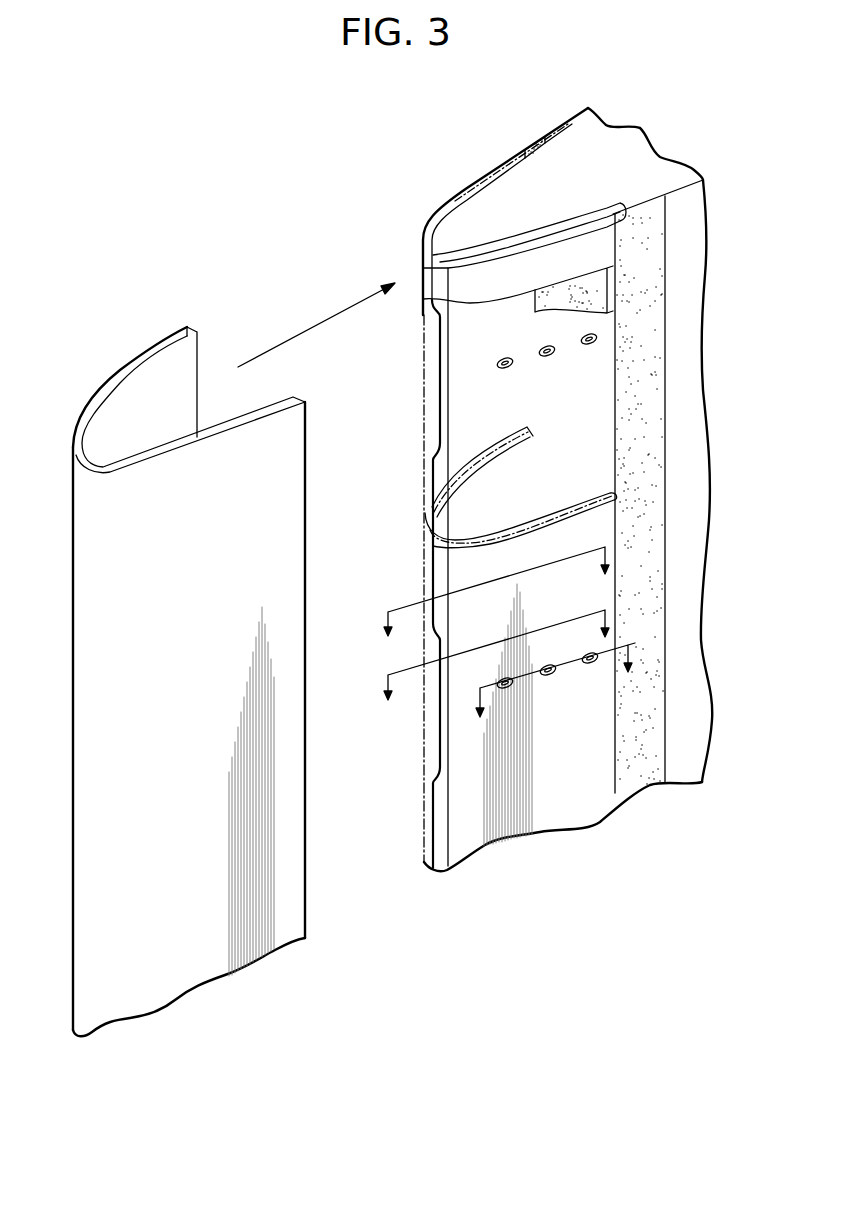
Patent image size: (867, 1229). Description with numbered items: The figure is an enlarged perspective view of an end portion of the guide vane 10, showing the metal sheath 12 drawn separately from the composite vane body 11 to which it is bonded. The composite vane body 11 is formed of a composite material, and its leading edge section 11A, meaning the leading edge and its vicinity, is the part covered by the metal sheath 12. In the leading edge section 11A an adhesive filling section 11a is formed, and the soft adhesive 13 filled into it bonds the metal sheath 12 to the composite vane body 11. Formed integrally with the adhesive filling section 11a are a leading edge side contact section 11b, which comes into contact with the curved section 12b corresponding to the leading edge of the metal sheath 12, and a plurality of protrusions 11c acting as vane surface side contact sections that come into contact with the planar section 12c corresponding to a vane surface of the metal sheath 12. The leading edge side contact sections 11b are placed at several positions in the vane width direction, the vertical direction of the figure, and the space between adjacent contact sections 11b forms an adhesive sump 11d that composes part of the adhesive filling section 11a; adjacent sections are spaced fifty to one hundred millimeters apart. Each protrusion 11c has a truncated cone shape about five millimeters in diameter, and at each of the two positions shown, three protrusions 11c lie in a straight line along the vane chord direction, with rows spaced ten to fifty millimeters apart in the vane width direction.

The guide vane 10 is at (396, 177).
The composite vane body 11 is at (637, 150).
The adhesive filling section 11a is at (492, 169).
The leading edge side contact section 11b is at (440, 477).
The protrusion 11c is at (582, 340).
The adhesive sump 11d is at (440, 408).
The leading edge section 11A is at (432, 552).
The metal sheath 12 is at (125, 370).
The curved section 12b is at (78, 560).
The planar section 12c is at (216, 960).
The soft adhesive 13 is at (645, 270).